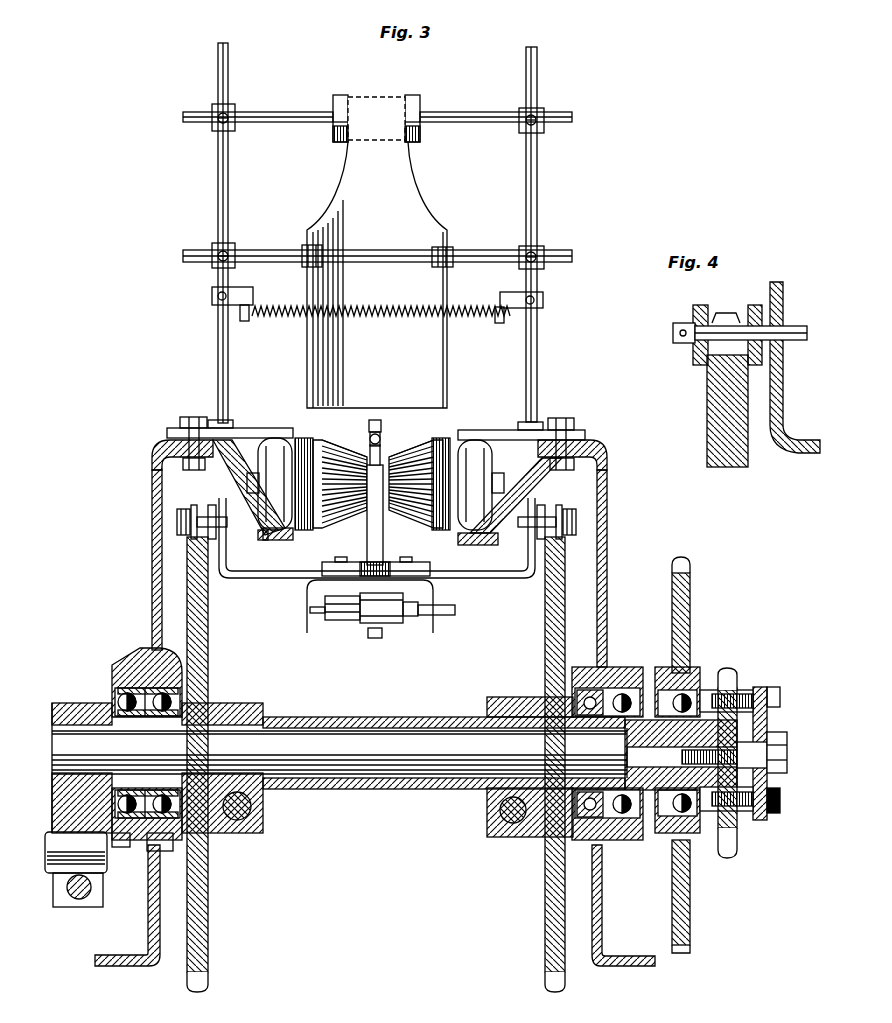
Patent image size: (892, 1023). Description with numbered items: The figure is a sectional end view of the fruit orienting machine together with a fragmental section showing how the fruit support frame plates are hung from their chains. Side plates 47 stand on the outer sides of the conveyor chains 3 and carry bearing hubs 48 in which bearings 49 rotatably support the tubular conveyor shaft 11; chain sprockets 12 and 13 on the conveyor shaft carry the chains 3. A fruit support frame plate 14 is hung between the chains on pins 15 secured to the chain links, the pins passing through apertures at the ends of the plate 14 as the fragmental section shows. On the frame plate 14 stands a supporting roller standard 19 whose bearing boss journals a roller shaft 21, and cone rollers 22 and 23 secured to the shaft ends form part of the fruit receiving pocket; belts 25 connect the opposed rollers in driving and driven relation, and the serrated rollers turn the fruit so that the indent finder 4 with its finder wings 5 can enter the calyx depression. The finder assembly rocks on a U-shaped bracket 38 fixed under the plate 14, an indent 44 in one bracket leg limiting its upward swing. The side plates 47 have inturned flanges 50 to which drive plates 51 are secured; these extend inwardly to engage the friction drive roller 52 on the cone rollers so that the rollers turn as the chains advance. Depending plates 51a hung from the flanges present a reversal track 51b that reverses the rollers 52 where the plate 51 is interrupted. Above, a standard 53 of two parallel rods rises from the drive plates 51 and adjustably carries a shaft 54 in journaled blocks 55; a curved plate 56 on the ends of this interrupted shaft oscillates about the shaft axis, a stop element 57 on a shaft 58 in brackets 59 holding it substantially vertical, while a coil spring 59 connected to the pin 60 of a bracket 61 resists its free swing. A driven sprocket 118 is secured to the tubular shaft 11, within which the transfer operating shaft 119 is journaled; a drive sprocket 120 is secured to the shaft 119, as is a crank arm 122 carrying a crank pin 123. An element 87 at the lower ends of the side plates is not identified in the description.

In FIG. 3, the conveyor chains 3 is at (184, 509).
In FIG. 4, the conveyor chains 3 is at (704, 367).
In FIG. 3, the indent finder 4 is at (381, 424).
In FIG. 3, the finder wings 5 is at (381, 439).
In FIG. 3, the conveyor shaft 11 is at (430, 722).
In FIG. 3, the chain sprocket 12 is at (210, 640).
In FIG. 4, the chain sprocket 12 is at (717, 433).
In FIG. 3, the chain sprocket 13 is at (548, 606).
In FIG. 3, the fruit support frame plate 14 is at (285, 578).
In FIG. 4, the fruit support frame plate 14 is at (773, 420).
In FIG. 3, the pin 15 is at (226, 523).
In FIG. 4, the pin 15 is at (792, 326).
In FIG. 3, the supporting roller standard 19 is at (384, 546).
In FIG. 3, the roller shaft 21 is at (502, 482).
In FIG. 3, the cone roller 22 is at (350, 454).
In FIG. 3, the cone roller 23 is at (412, 456).
In FIG. 3, the belt 25 is at (303, 438).
In FIG. 3, the U-shaped bracket 38 is at (312, 625).
In FIG. 3, the indent 44 is at (430, 628).
In FIG. 3, the side plate 47 is at (152, 563).
In FIG. 3, the bearing hub 48 is at (128, 653).
In FIG. 3, the bearing 49 is at (114, 682).
In FIG. 3, the inturned flange 50 is at (175, 430).
In FIG. 3, the drive plate 51 is at (255, 428).
In FIG. 3, the depending plate 51a is at (250, 493).
In FIG. 3, the reversal track 51b is at (285, 541).
In FIG. 3, the friction drive roller 52 is at (266, 538).
In FIG. 3, the standard 53 is at (536, 190).
In FIG. 3, the shaft 54 is at (565, 258).
In FIG. 3, the journaled block 55 is at (540, 250).
In FIG. 3, the curved plate 56 is at (420, 216).
In FIG. 3, the stop element 57 is at (418, 110).
In FIG. 3, the shaft 58 is at (457, 119).
In FIG. 3, the coil spring 59 is at (545, 110).
In FIG. 3, the pin 60 is at (244, 319).
In FIG. 3, the bracket 61 is at (545, 300).
In FIG. 3, the foot 87 is at (138, 967).
In FIG. 3, the driven sprocket 118 is at (690, 606).
In FIG. 3, the transfer operating shaft 119 is at (452, 768).
In FIG. 3, the drive sprocket 120 is at (737, 681).
In FIG. 3, the crank arm 122 is at (103, 893).
In FIG. 3, the crank pin 123 is at (107, 855).